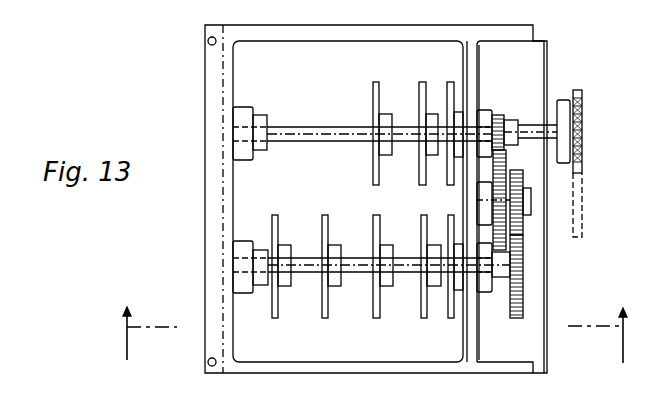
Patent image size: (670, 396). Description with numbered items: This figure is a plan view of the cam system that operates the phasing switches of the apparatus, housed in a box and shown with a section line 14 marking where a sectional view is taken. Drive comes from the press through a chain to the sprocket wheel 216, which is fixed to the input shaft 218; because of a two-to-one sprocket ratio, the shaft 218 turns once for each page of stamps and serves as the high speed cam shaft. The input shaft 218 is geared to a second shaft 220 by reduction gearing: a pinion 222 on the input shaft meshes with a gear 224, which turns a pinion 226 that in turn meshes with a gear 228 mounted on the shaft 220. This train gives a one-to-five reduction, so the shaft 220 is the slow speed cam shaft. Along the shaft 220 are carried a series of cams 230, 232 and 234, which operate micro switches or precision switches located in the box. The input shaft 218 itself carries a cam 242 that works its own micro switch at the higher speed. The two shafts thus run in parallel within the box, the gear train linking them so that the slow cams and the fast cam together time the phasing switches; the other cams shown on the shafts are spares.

The section line 14 is at (377, 335).
The sprocket wheel 216 is at (578, 90).
The input shaft 218 is at (530, 125).
The shaft 220 is at (409, 276).
The pinion 222 is at (498, 115).
The gear 224 is at (506, 165).
The pinion 226 is at (531, 186).
The gear 228 is at (525, 265).
The cam 230 is at (275, 318).
The cam 232 is at (325, 318).
The cam 234 is at (376, 318).
The cam 242 is at (421, 82).